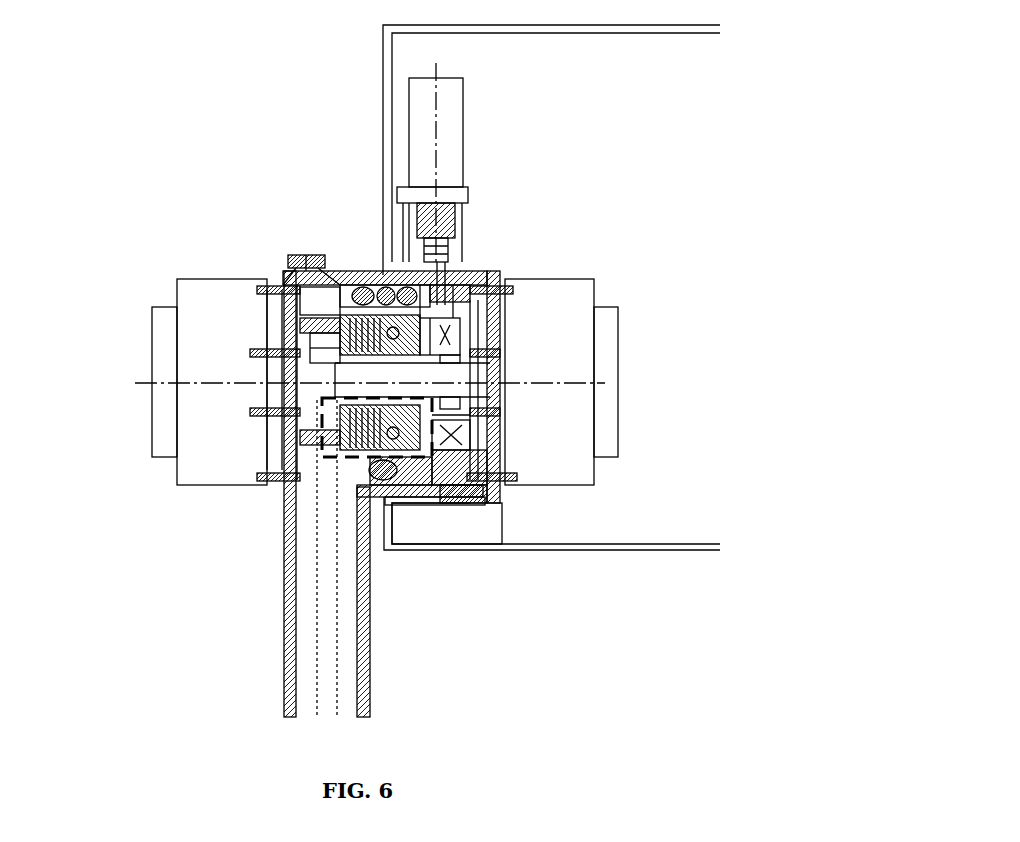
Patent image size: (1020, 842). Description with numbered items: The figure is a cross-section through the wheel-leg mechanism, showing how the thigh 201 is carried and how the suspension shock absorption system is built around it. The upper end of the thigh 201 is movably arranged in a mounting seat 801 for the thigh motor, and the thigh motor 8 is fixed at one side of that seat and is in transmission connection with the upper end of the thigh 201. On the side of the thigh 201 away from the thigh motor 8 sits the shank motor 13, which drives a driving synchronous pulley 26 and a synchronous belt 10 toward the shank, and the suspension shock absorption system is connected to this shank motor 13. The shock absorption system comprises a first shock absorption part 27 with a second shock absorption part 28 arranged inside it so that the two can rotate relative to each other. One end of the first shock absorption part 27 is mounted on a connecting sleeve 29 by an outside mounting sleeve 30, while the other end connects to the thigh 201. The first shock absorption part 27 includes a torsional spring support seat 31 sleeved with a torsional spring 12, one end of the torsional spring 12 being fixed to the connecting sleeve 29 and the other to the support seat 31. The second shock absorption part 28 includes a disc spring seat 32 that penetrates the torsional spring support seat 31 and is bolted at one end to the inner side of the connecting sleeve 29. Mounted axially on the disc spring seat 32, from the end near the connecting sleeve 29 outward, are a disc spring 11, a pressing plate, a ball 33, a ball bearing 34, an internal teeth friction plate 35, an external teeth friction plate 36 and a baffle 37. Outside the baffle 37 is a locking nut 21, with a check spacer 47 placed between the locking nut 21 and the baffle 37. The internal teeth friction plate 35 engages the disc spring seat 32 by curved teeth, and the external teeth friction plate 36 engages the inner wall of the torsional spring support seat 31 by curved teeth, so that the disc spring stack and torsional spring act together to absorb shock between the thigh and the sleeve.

The thigh motor 8 is at (528, 355).
The synchronous belt 10 is at (328, 645).
The disc spring 11 is at (393, 507).
The torsional spring 12 is at (413, 497).
The shank motor 13 is at (222, 435).
The locking nut 21 is at (490, 415).
The driving synchronous pulley 26 is at (283, 460).
The first shock absorption part 27 is at (425, 280).
The second shock absorption part 28 is at (322, 410).
The connecting sleeve 29 is at (436, 155).
The outside mounting sleeve 30 is at (287, 482).
The torsional spring support seat 31 is at (507, 500).
The disc spring seat 32 is at (460, 368).
The ball 33 is at (420, 500).
The ball bearing 34 is at (440, 500).
The internal teeth friction plate 35 is at (500, 463).
The external teeth friction plate 36 is at (493, 457).
The baffle 37 is at (490, 443).
The check spacer 47 is at (430, 415).
The thigh 201 is at (363, 540).
The mounting seat 801 is at (493, 490).